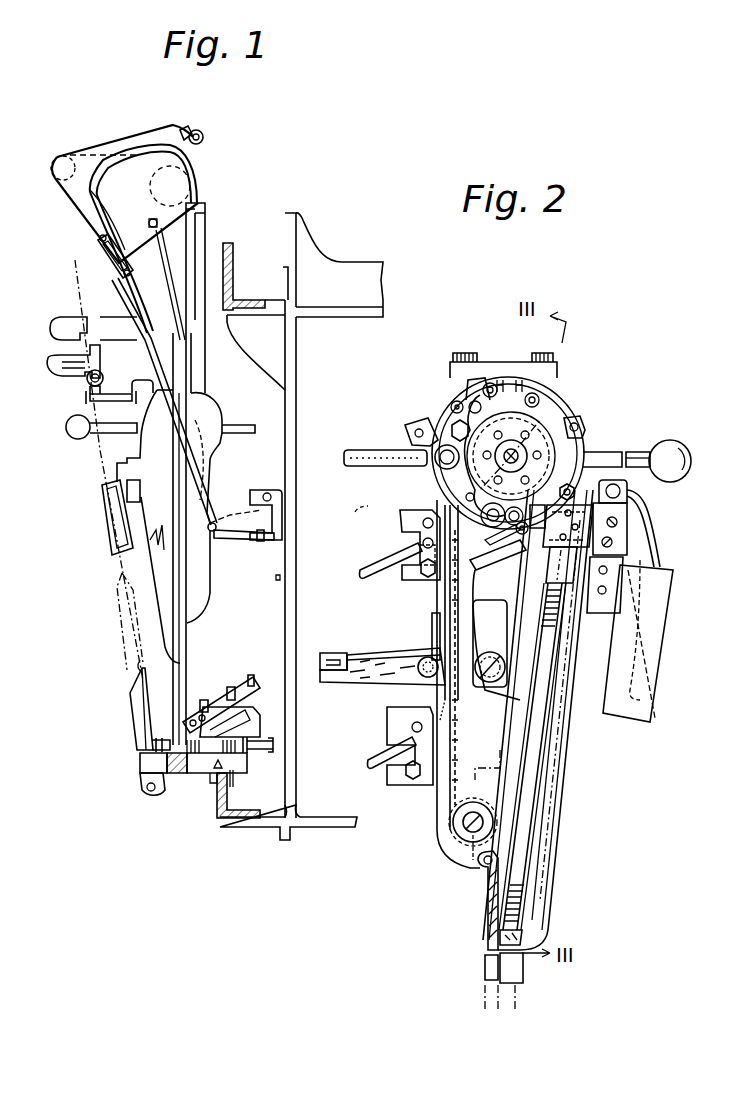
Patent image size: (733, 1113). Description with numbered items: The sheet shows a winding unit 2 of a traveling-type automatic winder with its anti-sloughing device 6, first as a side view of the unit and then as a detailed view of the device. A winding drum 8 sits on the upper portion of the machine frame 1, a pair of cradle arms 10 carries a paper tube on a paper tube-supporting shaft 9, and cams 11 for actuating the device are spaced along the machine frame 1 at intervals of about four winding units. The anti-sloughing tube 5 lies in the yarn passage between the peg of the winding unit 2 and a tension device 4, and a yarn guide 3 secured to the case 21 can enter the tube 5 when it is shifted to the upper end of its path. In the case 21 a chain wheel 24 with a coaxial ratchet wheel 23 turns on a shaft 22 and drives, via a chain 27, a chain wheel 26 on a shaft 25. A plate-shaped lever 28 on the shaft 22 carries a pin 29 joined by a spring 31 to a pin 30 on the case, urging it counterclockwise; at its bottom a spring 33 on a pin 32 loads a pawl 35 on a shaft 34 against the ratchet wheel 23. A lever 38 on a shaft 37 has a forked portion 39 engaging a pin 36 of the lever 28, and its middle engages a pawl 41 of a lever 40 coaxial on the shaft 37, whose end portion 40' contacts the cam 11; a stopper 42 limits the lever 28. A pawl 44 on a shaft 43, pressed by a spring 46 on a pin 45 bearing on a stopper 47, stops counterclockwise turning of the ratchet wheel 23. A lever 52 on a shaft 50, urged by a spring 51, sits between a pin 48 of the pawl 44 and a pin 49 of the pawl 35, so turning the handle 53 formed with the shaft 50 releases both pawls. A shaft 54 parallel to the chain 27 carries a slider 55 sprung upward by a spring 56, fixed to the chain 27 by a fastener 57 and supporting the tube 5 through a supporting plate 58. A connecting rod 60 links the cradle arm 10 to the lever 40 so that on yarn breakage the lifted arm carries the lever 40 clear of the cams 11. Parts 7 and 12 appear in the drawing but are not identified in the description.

In FIG. 1, the machine frame 1 is at (288, 612).
In FIG. 1, the winding unit 2 is at (79, 490).
In FIG. 1, the yarn guide 3 is at (110, 528).
In FIG. 2, the yarn guide 3 is at (655, 512).
In FIG. 1, the tension device 4 is at (62, 366).
In FIG. 1, the anti-sloughing tube 5 is at (112, 552).
In FIG. 2, the anti-sloughing tube 5 is at (660, 630).
In FIG. 1, the anti-sloughing device 6 is at (208, 598).
In FIG. 2, the anti-sloughing device 6 is at (418, 843).
In FIG. 1, the rod 7 is at (185, 690).
In FIG. 1, the winding drum 8 is at (203, 170).
In FIG. 1, the paper tube-supporting shaft 9 is at (204, 133).
In FIG. 1, the cradle arms 10 is at (78, 216).
In FIG. 1, the cams 11 is at (270, 530).
In FIG. 1, the blade 12 is at (126, 705).
In FIG. 1, the case 21 is at (168, 495).
In FIG. 2, the case 21 is at (436, 800).
In FIG. 2, the shaft 22 is at (569, 483).
In FIG. 2, the ratchet wheel 23 is at (586, 424).
In FIG. 2, the chain wheel 24 is at (570, 418).
In FIG. 2, the shaft 25 is at (468, 838).
In FIG. 2, the chain wheel 26 is at (465, 832).
In FIG. 2, the chain 27 is at (452, 742).
In FIG. 2, the plate-shaped lever 28 is at (555, 412).
In FIG. 2, the pin 29 is at (558, 385).
In FIG. 2, the pin 30 is at (503, 388).
In FIG. 2, the spring 31 is at (552, 380).
In FIG. 2, the pin 32 is at (452, 585).
In FIG. 2, the spring 33 is at (415, 572).
In FIG. 2, the shaft 34 is at (440, 582).
In FIG. 2, the pawl 35 is at (418, 520).
In FIG. 2, the pin 36 is at (525, 532).
In FIG. 2, the shaft 37 is at (490, 682).
In FIG. 2, the lever 38 is at (500, 580).
In FIG. 2, the forked portion 39 is at (495, 530).
In FIG. 1, the lever 40 is at (241, 545).
In FIG. 2, the lever 40 is at (393, 642).
In FIG. 1, the end portion 40' is at (260, 562).
In FIG. 2, the end portion 40' is at (334, 646).
In FIG. 2, the pawl 41 is at (478, 612).
In FIG. 2, the stopper 42 is at (634, 502).
In FIG. 2, the shaft 43 is at (482, 385).
In FIG. 2, the pawl 44 is at (500, 380).
In FIG. 2, the pin 45 is at (455, 400).
In FIG. 2, the spring 46 is at (460, 415).
In FIG. 2, the stopper 47 is at (450, 430).
In FIG. 2, the pin 48 is at (430, 420).
In FIG. 2, the pin 49 is at (465, 490).
In FIG. 2, the shaft 50 is at (430, 468).
In FIG. 2, the spring 51 is at (416, 433).
In FIG. 2, the lever 52 is at (445, 470).
In FIG. 1, the handle 53 is at (105, 440).
In FIG. 2, the handle 53 is at (642, 452).
In FIG. 2, the shaft 54 is at (545, 735).
In FIG. 2, the slider 55 is at (572, 610).
In FIG. 2, the spring 56 is at (558, 630).
In FIG. 2, the fastener 57 is at (527, 550).
In FIG. 2, the supporting plate 58 is at (628, 530).
In FIG. 1, the connecting rod 60 is at (141, 384).
In FIG. 2, the connecting rod 60 is at (428, 640).